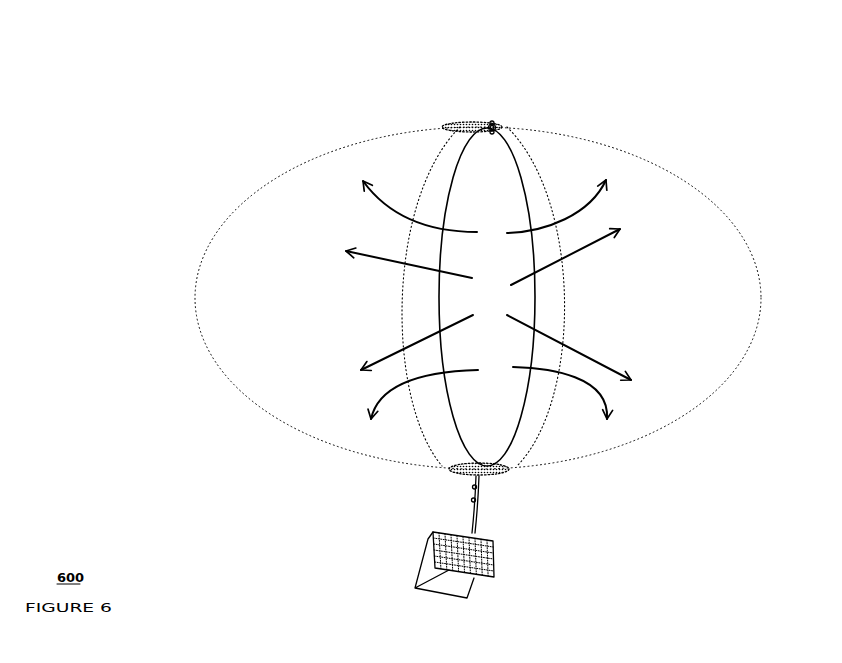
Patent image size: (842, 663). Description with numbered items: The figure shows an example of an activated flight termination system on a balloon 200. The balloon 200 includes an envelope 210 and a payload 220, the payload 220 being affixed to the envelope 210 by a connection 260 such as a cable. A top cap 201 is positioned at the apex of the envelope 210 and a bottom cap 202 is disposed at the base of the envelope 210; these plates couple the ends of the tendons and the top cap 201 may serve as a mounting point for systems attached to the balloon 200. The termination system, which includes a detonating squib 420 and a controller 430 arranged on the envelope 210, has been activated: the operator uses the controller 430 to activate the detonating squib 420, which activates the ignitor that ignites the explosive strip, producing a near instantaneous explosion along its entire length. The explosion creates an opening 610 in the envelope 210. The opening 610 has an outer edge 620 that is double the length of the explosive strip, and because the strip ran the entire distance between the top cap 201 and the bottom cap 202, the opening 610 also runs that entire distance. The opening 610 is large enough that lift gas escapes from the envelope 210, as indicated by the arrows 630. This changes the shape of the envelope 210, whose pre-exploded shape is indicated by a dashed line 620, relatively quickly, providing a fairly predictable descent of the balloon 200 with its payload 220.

The balloon 200 is at (389, 52).
The top cap 201 is at (465, 120).
The bottom cap 202 is at (467, 477).
The envelope 210 is at (532, 183).
The payload 220 is at (494, 548).
The connection 260 is at (478, 512).
The detonating squib 420 is at (494, 125).
The controller 430 is at (484, 122).
The opening 610 is at (489, 173).
The outer edge 620 is at (680, 180).
The arrows 630 is at (372, 253).